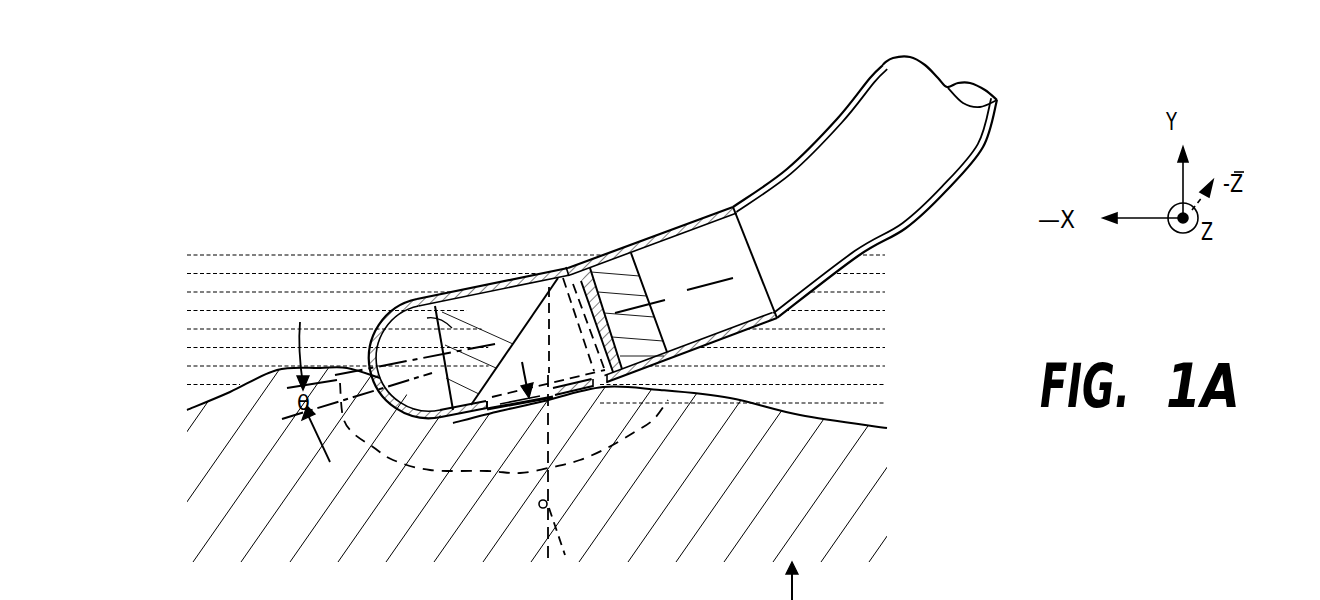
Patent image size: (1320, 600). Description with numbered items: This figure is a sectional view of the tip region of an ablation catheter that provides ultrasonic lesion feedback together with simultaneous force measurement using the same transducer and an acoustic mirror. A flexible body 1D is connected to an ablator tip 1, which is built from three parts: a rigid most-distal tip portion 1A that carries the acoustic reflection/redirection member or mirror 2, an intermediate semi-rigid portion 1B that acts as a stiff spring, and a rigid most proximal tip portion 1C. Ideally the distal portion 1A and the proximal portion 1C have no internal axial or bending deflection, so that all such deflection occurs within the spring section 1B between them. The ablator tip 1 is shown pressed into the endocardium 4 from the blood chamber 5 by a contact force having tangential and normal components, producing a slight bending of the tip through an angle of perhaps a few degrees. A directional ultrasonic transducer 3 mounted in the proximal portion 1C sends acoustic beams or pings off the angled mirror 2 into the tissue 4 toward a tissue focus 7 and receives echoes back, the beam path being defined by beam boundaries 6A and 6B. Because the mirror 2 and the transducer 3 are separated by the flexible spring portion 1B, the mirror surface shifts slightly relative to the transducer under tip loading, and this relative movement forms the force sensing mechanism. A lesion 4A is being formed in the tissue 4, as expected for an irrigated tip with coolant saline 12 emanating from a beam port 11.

The ablator tip 1 is at (445, 113).
The rigid most-distal tip portion 1A is at (464, 313).
The intermediate semi-rigid portion 1B is at (556, 258).
The rigid most proximal tip portion 1C is at (672, 263).
The flexible body 1D is at (784, 173).
The acoustic reflection/redirection member 2 is at (393, 358).
The ultrasonic transducer 3 is at (624, 291).
The endocardium 4 is at (760, 445).
The lesion 4A is at (627, 437).
The blood chamber 5 is at (788, 362).
The beam boundary 6A is at (510, 414).
The beam boundary 6B is at (547, 427).
The tissue focus 7 is at (547, 506).
The beam port 11 is at (490, 425).
The coolant saline 12 is at (548, 338).